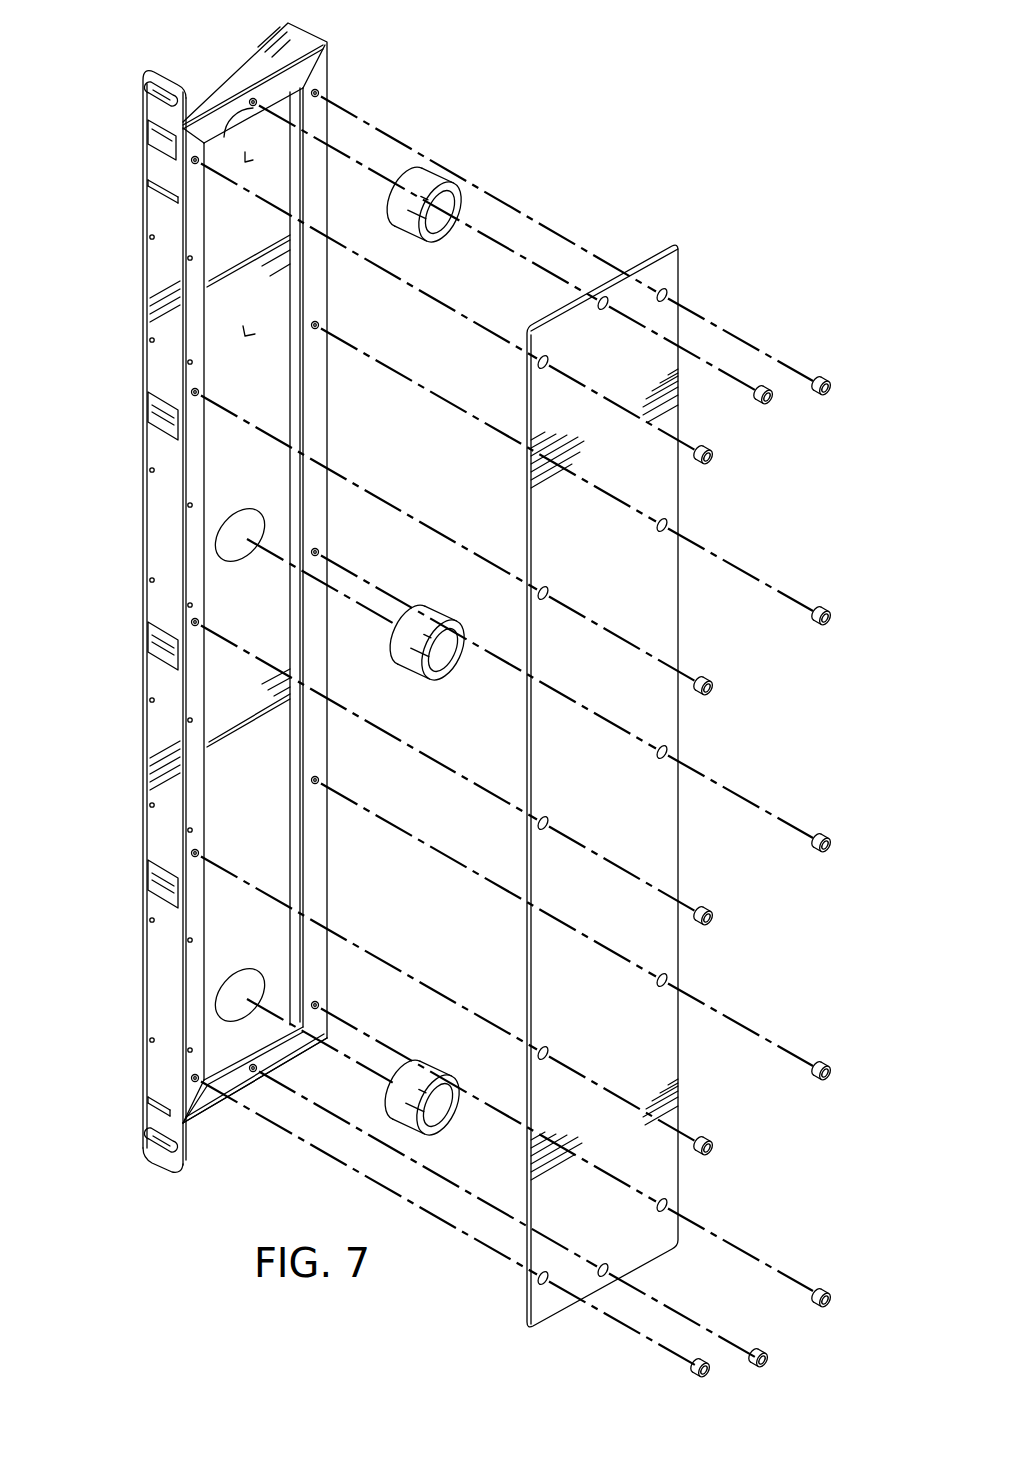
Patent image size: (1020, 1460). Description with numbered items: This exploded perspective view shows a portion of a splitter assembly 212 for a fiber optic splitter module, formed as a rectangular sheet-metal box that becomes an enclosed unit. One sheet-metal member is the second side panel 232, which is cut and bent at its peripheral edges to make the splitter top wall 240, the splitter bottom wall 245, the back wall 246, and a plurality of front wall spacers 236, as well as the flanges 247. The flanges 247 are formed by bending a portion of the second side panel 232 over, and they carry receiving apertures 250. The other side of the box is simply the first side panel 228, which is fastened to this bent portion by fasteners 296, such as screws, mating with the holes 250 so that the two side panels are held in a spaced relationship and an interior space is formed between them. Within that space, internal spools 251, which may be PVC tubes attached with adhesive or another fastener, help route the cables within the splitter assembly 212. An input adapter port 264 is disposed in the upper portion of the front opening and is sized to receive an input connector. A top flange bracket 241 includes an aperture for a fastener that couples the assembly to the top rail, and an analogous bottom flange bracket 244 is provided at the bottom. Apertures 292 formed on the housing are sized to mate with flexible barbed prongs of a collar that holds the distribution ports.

The splitter assembly 212 is at (197, 78).
The first side panel 228 is at (672, 626).
The second side panel 232 is at (271, 481).
The front wall spacers 236 is at (146, 404).
The splitter top wall 240 is at (246, 52).
The top flange bracket 241 is at (148, 99).
The bottom flange bracket 244 is at (148, 1120).
The splitter bottom wall 245 is at (215, 1130).
The back wall 246 is at (330, 46).
The flanges 247 is at (203, 578).
The receiving apertures 250 is at (322, 91).
The internal spools 251 is at (440, 616).
The input adapter port 264 is at (148, 136).
The apertures 292 is at (147, 812).
The fasteners 296 is at (832, 838).